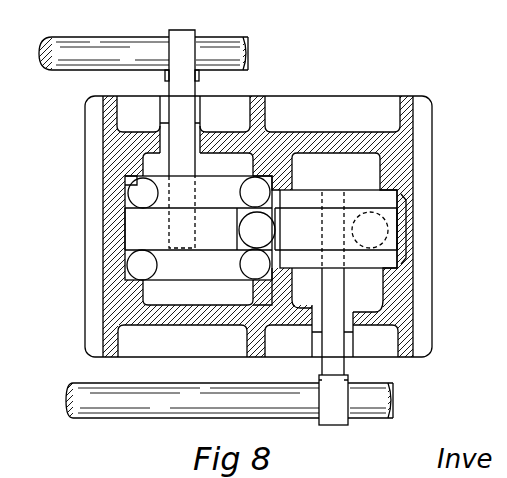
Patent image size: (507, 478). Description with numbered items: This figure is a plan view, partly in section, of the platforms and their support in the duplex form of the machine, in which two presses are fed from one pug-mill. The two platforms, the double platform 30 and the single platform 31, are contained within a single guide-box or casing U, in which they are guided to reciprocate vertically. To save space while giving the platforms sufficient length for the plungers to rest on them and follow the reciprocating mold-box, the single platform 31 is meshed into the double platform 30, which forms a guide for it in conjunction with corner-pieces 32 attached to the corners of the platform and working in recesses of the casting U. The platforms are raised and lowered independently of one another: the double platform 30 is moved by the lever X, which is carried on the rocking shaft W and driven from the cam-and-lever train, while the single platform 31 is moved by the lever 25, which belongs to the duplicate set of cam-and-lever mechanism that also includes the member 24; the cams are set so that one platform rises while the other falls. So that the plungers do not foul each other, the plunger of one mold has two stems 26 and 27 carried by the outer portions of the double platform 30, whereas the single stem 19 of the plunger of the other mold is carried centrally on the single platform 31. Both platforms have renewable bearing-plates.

The rocking shaft W is at (89, 50).
The lever X is at (182, 139).
The guide-box casing U is at (398, 168).
The corner-pieces 32 is at (127, 179).
The double platform 30 is at (181, 229).
The single platform 31 is at (336, 229).
The plunger stem 26 is at (199, 192).
The plunger stem 27 is at (198, 264).
The single stem 19 is at (257, 230).
The lever 25 is at (333, 308).
The cam-and-lever mechanism member 24 is at (177, 392).